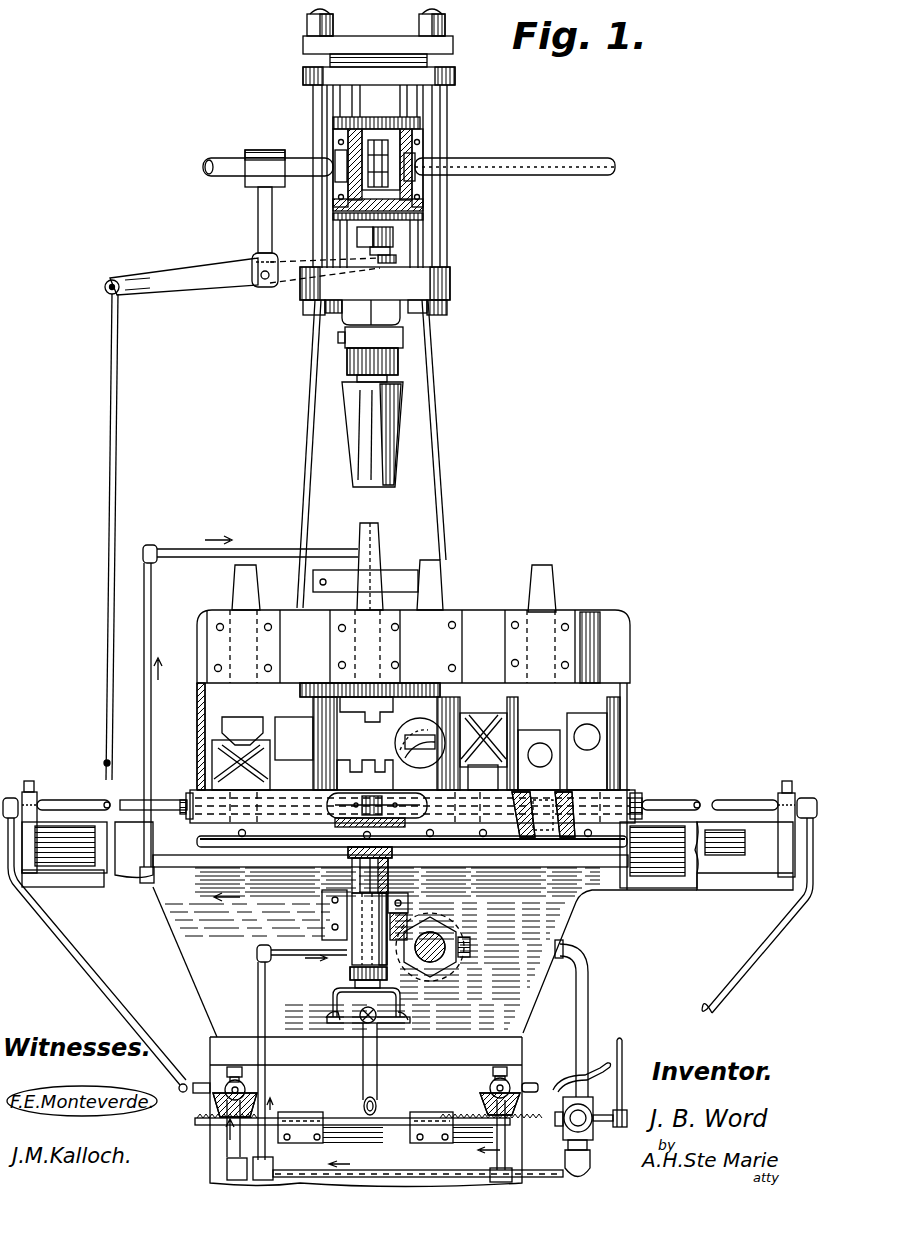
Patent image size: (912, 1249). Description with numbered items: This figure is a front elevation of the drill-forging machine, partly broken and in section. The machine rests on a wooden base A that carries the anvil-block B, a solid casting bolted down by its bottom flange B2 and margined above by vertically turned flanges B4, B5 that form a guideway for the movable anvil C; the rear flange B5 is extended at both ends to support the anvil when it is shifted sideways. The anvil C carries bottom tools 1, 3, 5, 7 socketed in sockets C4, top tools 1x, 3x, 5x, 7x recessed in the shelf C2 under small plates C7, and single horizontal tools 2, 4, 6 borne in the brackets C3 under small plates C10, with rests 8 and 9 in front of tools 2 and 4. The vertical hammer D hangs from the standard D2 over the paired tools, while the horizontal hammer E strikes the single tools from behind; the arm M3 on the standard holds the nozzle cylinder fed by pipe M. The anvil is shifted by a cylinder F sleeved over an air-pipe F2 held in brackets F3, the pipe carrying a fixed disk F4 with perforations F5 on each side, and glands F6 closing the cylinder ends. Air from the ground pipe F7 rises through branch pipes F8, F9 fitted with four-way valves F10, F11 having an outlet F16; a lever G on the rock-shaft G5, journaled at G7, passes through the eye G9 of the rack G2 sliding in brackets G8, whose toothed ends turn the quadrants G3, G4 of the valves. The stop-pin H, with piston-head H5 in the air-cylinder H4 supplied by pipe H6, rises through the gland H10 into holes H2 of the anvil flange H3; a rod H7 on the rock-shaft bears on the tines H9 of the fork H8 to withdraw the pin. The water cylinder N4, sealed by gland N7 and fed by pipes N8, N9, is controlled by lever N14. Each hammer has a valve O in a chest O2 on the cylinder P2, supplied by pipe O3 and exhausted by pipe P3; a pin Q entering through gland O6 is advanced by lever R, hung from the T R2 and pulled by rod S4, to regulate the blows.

The automatic valve O is at (385, 157).
The valve chest O2 is at (410, 203).
The supply-pipe O3 is at (497, 160).
The stuffing-box and gland O6 is at (358, 235).
The hammer cylinder P2 is at (413, 237).
The exhaust-pipe P3 is at (205, 168).
The pin Q is at (385, 250).
The lever R is at (210, 283).
The T R2 is at (245, 185).
The rod S4 is at (117, 410).
The vertical hammer D is at (400, 445).
The standard D2 is at (440, 485).
The pipe M is at (152, 628).
The arm or bracket M3 is at (405, 577).
The horizontal hammer E is at (447, 695).
The shelf C2 is at (625, 645).
The brackets C3 is at (628, 710).
The small plates C7 is at (275, 640).
The small plates C10 is at (280, 703).
The movable anvil C is at (640, 795).
The sockets C4 is at (553, 860).
The bottom tool 5 is at (241, 765).
The top tool 5x is at (242, 731).
The single tool 6 is at (294, 738).
The bottom tool 7 is at (365, 775).
The top tool 7x is at (366, 709).
The bottom tool 3 is at (441, 777).
The top tool 3x is at (420, 743).
The single tool 4 is at (483, 740).
The rest 9 is at (483, 777).
The bottom tool 1 is at (533, 782).
The top tool 1x is at (539, 760).
The single tool 2 is at (587, 751).
The rest 8 is at (578, 781).
The cylinder F is at (335, 814).
The air-pipe F2 is at (110, 797).
The brackets F3 is at (33, 815).
The disk F4 is at (355, 822).
The perforations F5 is at (350, 820).
The stuffing-boxes and glands F6 is at (187, 797).
The outlet F16 is at (645, 800).
The pipe F7 is at (410, 1172).
The branch pipe F8 is at (200, 1118).
The branch pipe F9 is at (545, 1128).
The rotary valve F10 is at (245, 1085).
The rotary valve F11 is at (508, 1082).
The anvil-block B is at (210, 985).
The flange B2 is at (210, 1048).
The flange B4 is at (128, 858).
The flange B5 is at (80, 863).
The base A is at (212, 1148).
The stop-pin H is at (340, 870).
The holes H2 is at (240, 868).
The forward flange H3 is at (265, 870).
The air-cylinder H4 is at (345, 955).
The piston-head H5 is at (350, 893).
The pipe H6 is at (255, 988).
The rod H7 is at (380, 1022).
The fork H8 is at (357, 996).
The tines H9 is at (325, 1015).
The stuffing-box and gland H10 is at (350, 975).
The lever G is at (377, 1050).
The rack G2 is at (400, 1115).
The sector gear G3 is at (260, 1098).
The sector gear G4 is at (485, 1100).
The rock-shaft G5 is at (362, 1030).
The journal G7 is at (348, 1023).
The brackets G8 is at (410, 1135).
The eye G9 is at (362, 1107).
The cylinder N4 is at (625, 1115).
The stuffing-box and gland N7 is at (447, 950).
The pipe N8 is at (578, 990).
The pipe N9 is at (595, 1160).
The lever N14 is at (590, 1073).